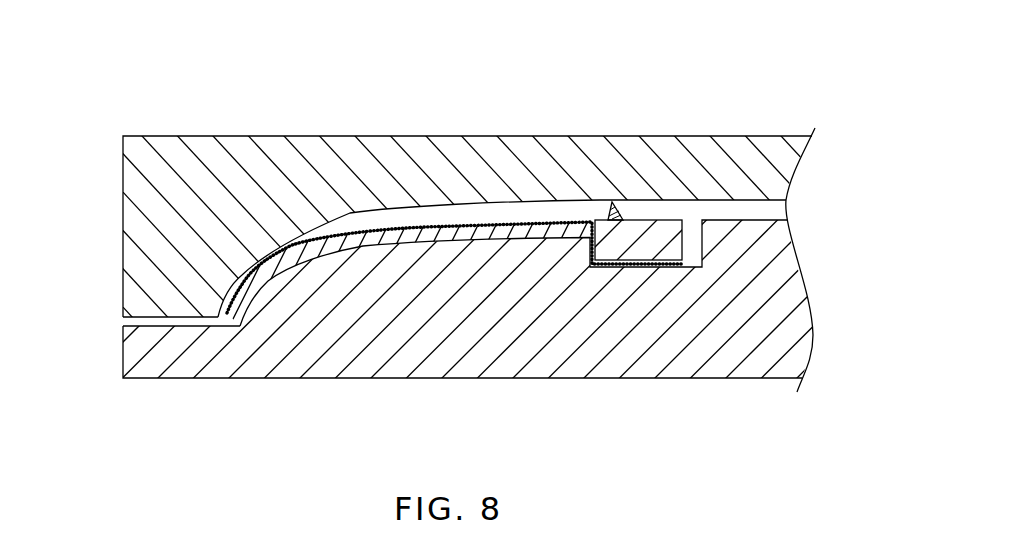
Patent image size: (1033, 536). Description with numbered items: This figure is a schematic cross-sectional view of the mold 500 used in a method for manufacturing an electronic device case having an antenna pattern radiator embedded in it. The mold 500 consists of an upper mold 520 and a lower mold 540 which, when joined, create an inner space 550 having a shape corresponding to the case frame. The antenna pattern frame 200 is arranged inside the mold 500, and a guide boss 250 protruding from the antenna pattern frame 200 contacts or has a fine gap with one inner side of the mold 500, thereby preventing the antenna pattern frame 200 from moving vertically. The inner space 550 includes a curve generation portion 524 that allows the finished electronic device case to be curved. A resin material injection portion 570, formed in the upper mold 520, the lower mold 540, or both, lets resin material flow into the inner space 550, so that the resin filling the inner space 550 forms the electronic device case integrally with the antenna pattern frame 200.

The mold 500 is at (186, 34).
The upper mold 520 is at (437, 136).
The curve generation portion 524 is at (226, 276).
The inner space 550 is at (514, 212).
The guide boss 250 is at (612, 202).
The resin material injection portion 570 is at (121, 325).
The lower mold 540 is at (392, 378).
The antenna pattern frame 200 is at (455, 243).